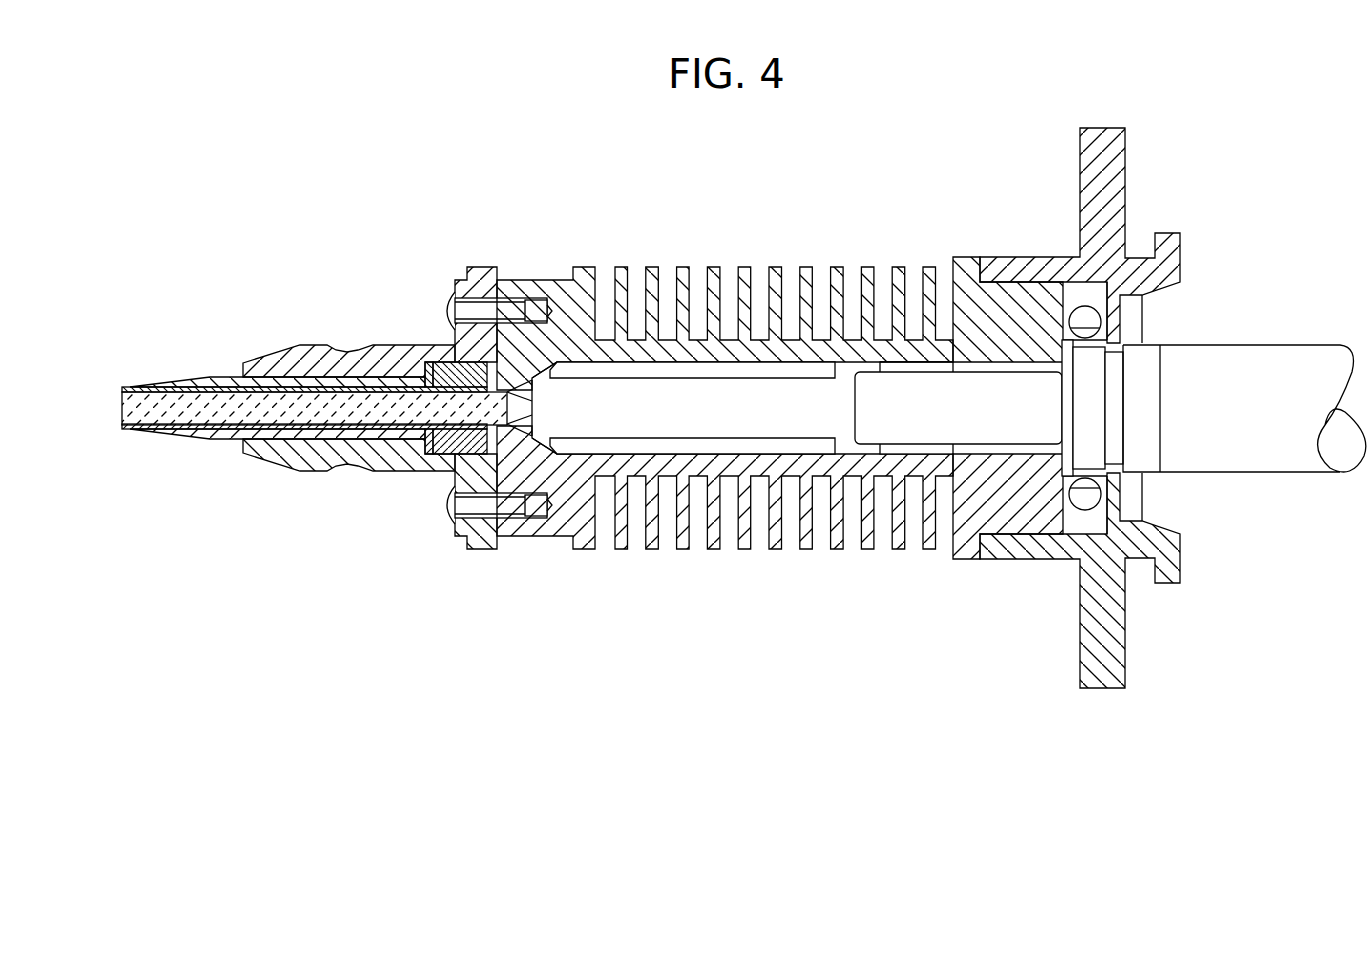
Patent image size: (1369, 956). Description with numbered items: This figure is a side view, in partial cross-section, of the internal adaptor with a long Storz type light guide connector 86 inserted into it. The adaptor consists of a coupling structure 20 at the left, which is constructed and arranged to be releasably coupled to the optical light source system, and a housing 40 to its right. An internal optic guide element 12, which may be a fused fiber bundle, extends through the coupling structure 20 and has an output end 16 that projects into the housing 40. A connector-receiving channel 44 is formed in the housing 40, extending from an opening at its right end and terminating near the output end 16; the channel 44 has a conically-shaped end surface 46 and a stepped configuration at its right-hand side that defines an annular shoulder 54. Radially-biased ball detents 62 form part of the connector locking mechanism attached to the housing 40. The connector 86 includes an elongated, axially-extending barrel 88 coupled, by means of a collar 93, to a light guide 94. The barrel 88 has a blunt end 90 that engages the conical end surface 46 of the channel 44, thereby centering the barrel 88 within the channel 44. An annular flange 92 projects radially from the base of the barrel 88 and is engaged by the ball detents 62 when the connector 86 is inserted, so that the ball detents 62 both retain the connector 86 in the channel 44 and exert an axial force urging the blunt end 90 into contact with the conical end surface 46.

The internal optic guide element 12 is at (118, 413).
The output end 16 is at (530, 404).
The coupling structure 20 is at (278, 343).
The housing 40 is at (680, 260).
The connector-receiving channel 44 is at (722, 370).
The conically-shaped end surface 46 is at (535, 441).
The annular shoulder 54 is at (1050, 470).
The ball detents 62 is at (1083, 318).
The Storz type connector 86 is at (940, 358).
The barrel 88 is at (790, 395).
The blunt end 90 is at (525, 434).
The annular flange 92 is at (1070, 415).
The collar 93 is at (1147, 473).
The light guide 94 is at (1310, 474).